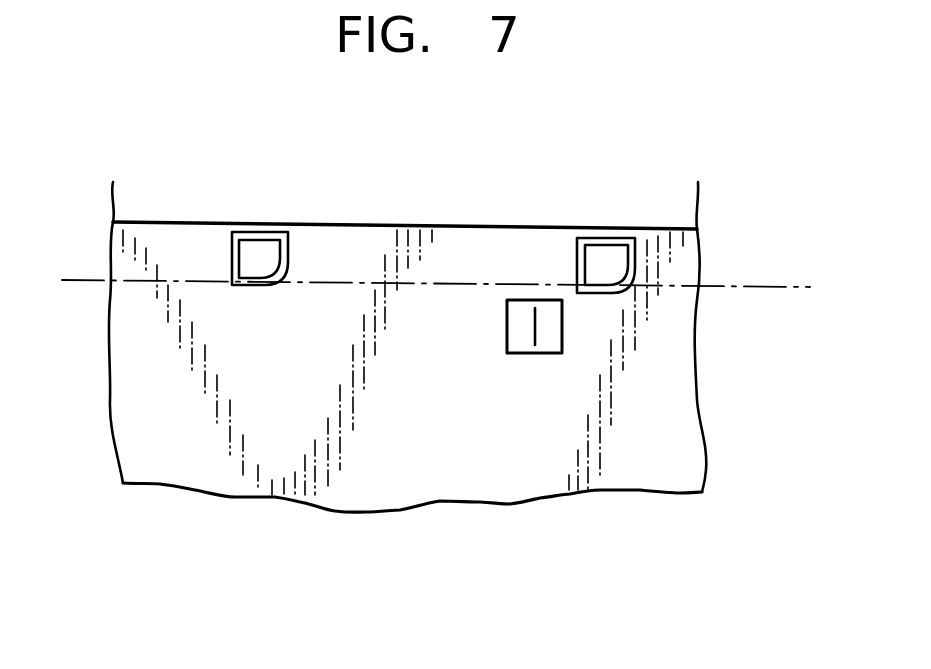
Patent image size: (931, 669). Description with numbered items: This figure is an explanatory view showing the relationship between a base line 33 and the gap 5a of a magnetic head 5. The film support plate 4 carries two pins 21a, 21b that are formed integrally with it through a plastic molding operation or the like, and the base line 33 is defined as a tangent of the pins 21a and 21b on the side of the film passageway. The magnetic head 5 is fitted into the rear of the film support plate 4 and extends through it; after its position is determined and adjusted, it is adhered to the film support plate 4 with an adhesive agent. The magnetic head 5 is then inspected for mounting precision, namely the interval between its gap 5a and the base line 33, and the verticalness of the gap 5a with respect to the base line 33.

The film support plate 4 is at (395, 492).
The magnetic head 5 is at (548, 353).
The gap 5a is at (533, 328).
The pin 21a is at (605, 258).
The pin 21b is at (265, 250).
The base line 33 is at (789, 286).